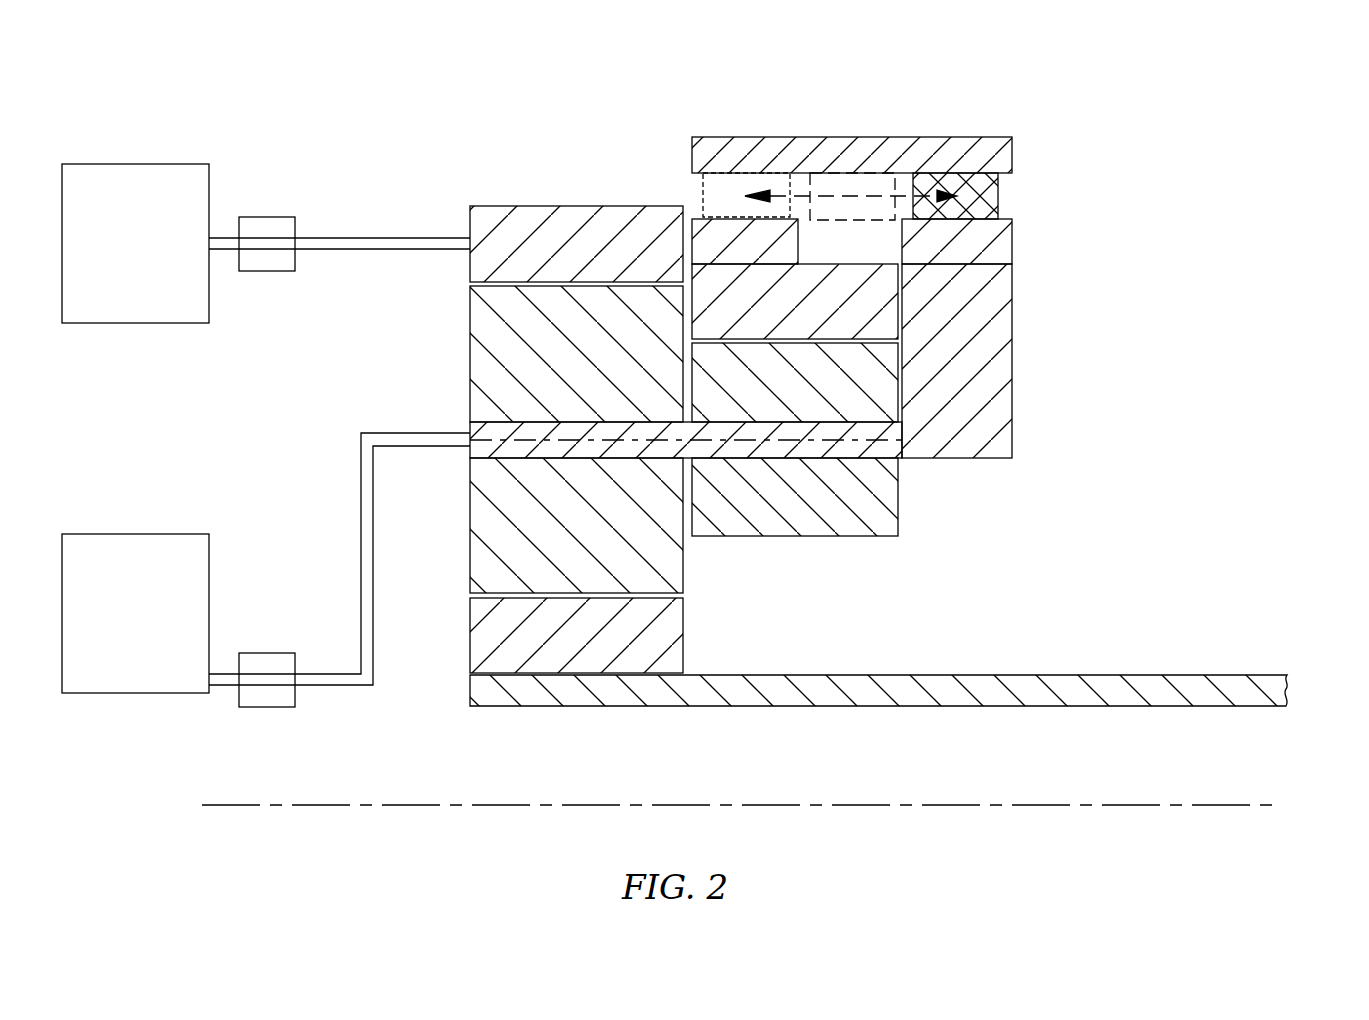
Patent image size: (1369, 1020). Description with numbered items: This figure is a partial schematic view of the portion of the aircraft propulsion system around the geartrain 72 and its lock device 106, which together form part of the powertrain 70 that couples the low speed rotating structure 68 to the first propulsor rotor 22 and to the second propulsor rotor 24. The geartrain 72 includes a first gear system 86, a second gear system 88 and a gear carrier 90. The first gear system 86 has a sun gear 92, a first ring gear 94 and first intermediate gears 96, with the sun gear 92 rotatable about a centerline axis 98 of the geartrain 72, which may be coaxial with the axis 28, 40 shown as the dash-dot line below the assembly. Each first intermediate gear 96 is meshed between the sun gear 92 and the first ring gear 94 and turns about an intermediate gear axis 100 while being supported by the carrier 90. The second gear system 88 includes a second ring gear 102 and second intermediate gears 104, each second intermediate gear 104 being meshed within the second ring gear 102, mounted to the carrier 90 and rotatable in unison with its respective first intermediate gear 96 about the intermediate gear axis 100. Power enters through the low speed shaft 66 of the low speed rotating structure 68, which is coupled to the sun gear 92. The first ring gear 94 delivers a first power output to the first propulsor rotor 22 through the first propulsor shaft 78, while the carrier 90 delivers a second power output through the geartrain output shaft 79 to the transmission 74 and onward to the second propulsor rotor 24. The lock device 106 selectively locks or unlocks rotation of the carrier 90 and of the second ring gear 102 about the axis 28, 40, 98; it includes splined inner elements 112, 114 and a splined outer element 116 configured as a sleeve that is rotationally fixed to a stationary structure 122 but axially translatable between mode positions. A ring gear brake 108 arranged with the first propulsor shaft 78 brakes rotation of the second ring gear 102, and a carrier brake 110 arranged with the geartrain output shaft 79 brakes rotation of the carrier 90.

The first propulsor rotor 22 is at (122, 255).
The second propulsor rotor 24 is at (135, 613).
The transmission 74 is at (104, 623).
The axis 28 is at (739, 841).
The axis 40 is at (739, 841).
The centerline axis 98 is at (1265, 806).
The low speed shaft 66 is at (1178, 706).
The low speed rotating structure 68 is at (1304, 687).
The powertrain 70 is at (1082, 83).
The geartrain 72 is at (540, 156).
The first propulsor shaft 78 is at (380, 238).
The geartrain output shaft 79 is at (328, 690).
The first gear system 86 is at (430, 348).
The second gear system 88 is at (868, 572).
The gear carrier 90 is at (1011, 350).
The sun gear 92 is at (683, 639).
The first ring gear 94 is at (598, 206).
The first intermediate gears 96 is at (470, 384).
The intermediate gear axis 100 is at (905, 440).
The second ring gear 102 is at (900, 305).
The second intermediate gears 104 is at (898, 520).
The lock device 106 is at (929, 112).
The ring gear brake 108 is at (268, 217).
The carrier brake 110 is at (268, 653).
The splined inner element 112 is at (1011, 238).
The splined inner element 114 is at (798, 245).
The splined outer element 116 is at (1011, 200).
The stationary structure 122 is at (793, 137).